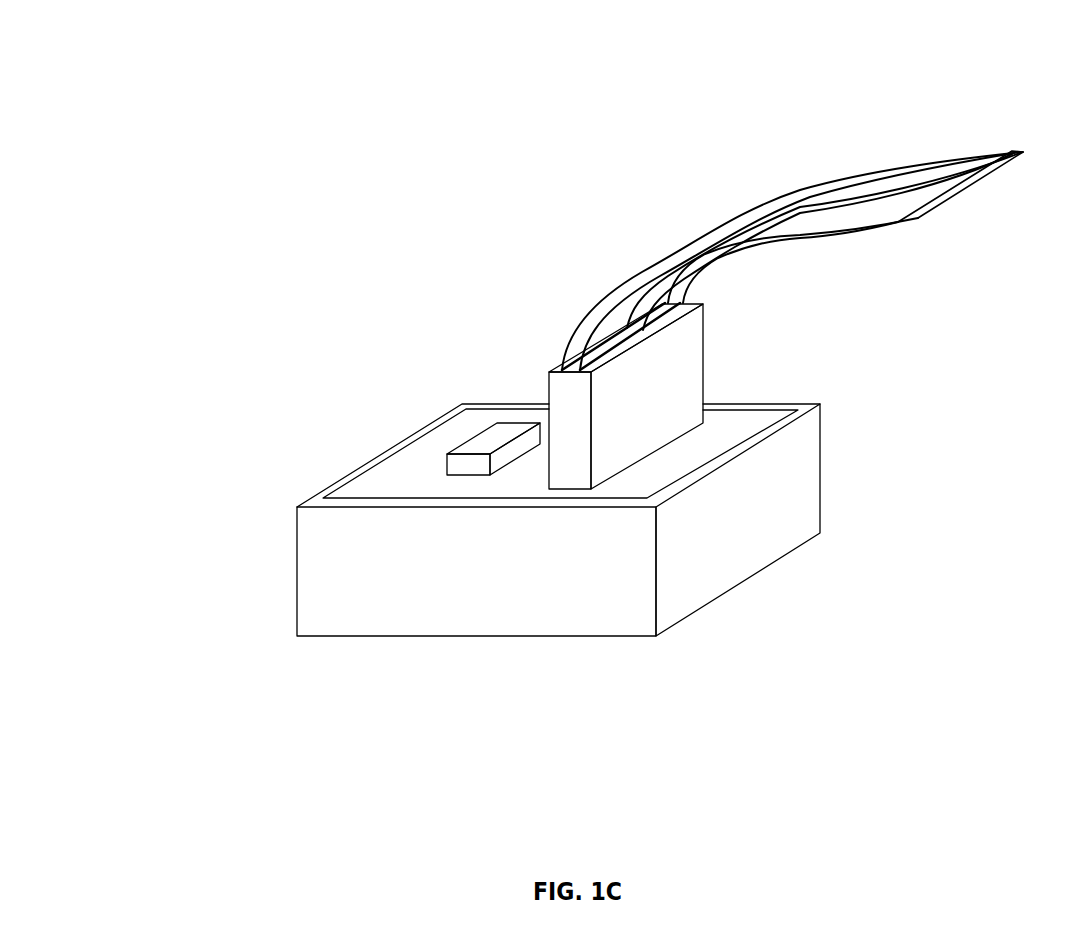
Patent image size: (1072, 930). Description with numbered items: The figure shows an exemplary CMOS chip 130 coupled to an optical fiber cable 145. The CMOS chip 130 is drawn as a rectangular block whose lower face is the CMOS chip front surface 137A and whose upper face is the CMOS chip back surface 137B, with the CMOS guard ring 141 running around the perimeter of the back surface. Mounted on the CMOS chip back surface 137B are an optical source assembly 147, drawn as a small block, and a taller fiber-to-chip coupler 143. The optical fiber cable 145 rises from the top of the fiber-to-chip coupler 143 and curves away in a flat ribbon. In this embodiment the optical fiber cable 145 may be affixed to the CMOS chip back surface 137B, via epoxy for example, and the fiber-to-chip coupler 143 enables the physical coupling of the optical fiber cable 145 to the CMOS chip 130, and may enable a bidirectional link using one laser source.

The CMOS chip 130 is at (160, 98).
The CMOS chip front surface 137A is at (547, 803).
The CMOS chip back surface 137B is at (430, 444).
The CMOS guard ring 141 is at (804, 470).
The fiber-to-chip coupler 143 is at (704, 333).
The optical fiber cable 145 is at (739, 203).
The optical source assembly 147 is at (487, 414).